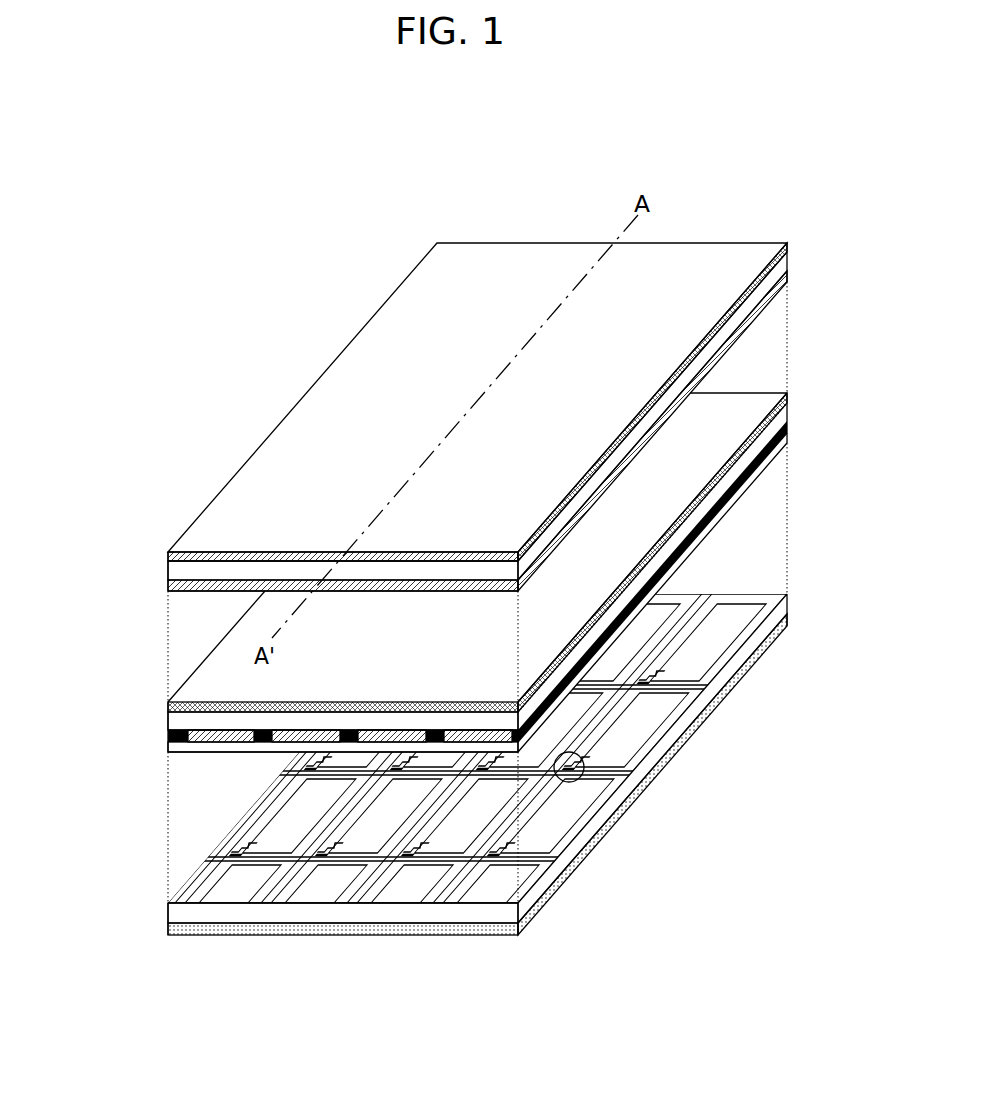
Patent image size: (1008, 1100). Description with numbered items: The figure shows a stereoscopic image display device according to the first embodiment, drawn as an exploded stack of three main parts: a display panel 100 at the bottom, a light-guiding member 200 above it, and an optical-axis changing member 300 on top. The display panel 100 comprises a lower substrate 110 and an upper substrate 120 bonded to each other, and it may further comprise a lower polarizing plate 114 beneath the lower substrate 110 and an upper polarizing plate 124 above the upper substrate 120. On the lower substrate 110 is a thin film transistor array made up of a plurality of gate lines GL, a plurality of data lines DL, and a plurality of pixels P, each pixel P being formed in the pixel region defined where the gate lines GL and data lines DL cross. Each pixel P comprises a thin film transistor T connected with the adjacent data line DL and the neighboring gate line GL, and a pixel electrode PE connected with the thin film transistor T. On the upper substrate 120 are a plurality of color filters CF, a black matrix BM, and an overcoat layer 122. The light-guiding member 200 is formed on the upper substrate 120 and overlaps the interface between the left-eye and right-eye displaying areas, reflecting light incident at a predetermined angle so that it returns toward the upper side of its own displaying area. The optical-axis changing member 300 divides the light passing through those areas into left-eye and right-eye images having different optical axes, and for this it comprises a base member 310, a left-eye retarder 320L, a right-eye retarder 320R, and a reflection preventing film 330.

The optical-axis changing member 300 is at (215, 455).
The reflection preventing film 330 is at (168, 556).
The base member 310 is at (168, 572).
The right-eye retarder 320R is at (168, 588).
The left-eye retarder 320L is at (762, 305).
The light-guiding member 200 is at (737, 488).
The upper polarizing plate 124 is at (168, 705).
The upper substrate 120 is at (168, 720).
The overcoat layer 122 is at (168, 744).
The color filter CF is at (212, 736).
The black matrix BM is at (790, 424).
The display panel 100 is at (84, 692).
The lower substrate 110 is at (168, 910).
The lower polarizing plate 114 is at (168, 928).
The pixel electrode PE is at (658, 720).
The thin film transistor T is at (584, 763).
The pixel P is at (767, 728).
The data line DL is at (532, 798).
The gate line GL is at (540, 850).